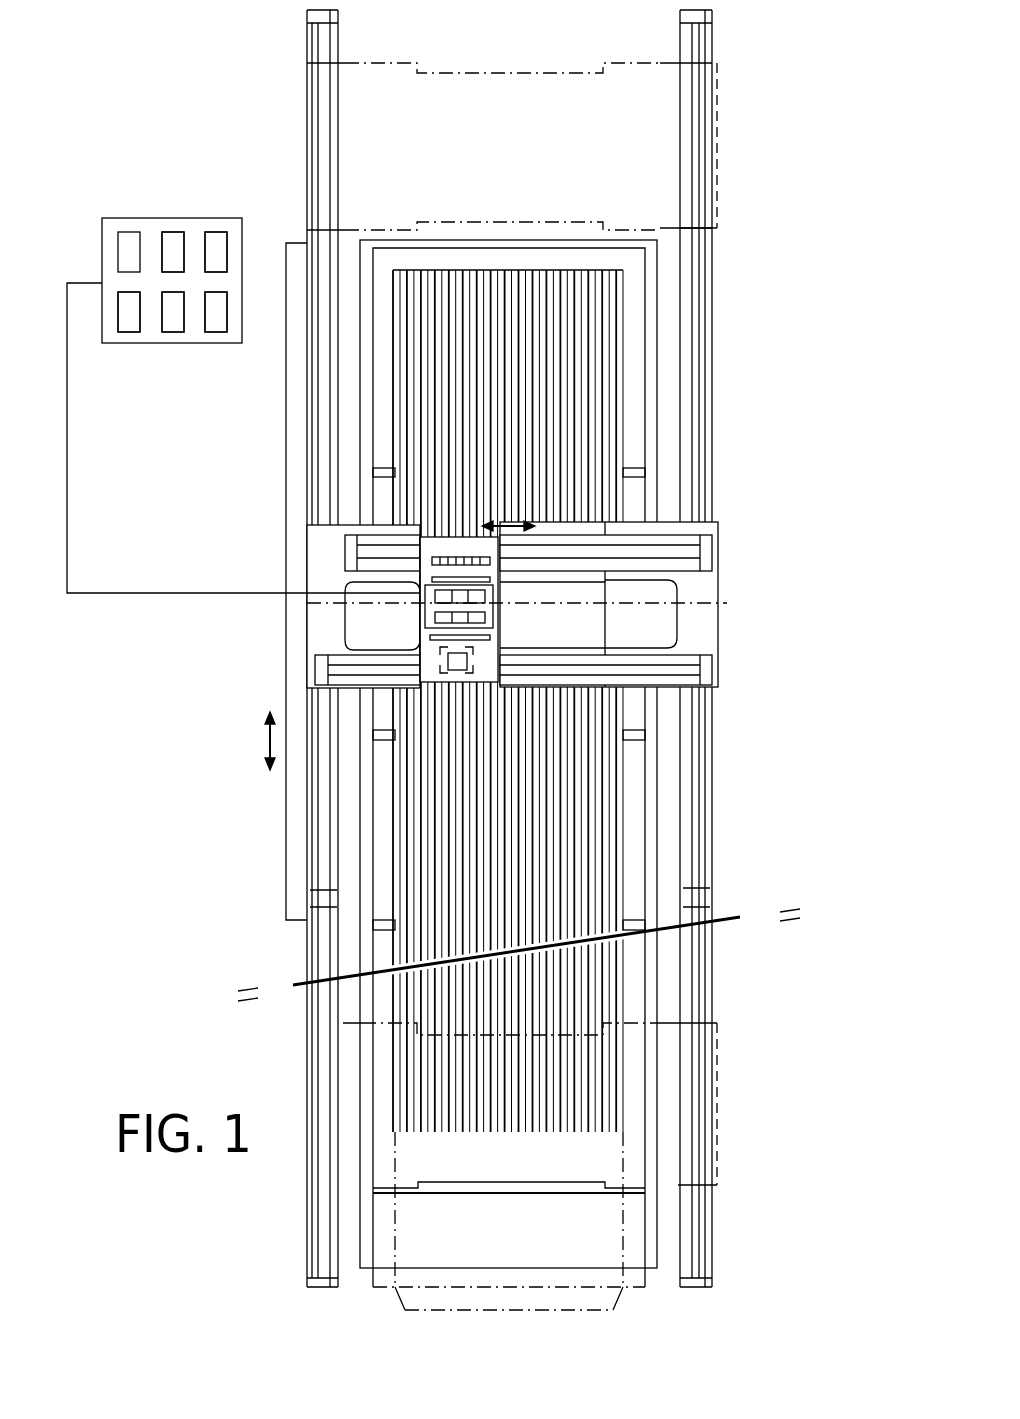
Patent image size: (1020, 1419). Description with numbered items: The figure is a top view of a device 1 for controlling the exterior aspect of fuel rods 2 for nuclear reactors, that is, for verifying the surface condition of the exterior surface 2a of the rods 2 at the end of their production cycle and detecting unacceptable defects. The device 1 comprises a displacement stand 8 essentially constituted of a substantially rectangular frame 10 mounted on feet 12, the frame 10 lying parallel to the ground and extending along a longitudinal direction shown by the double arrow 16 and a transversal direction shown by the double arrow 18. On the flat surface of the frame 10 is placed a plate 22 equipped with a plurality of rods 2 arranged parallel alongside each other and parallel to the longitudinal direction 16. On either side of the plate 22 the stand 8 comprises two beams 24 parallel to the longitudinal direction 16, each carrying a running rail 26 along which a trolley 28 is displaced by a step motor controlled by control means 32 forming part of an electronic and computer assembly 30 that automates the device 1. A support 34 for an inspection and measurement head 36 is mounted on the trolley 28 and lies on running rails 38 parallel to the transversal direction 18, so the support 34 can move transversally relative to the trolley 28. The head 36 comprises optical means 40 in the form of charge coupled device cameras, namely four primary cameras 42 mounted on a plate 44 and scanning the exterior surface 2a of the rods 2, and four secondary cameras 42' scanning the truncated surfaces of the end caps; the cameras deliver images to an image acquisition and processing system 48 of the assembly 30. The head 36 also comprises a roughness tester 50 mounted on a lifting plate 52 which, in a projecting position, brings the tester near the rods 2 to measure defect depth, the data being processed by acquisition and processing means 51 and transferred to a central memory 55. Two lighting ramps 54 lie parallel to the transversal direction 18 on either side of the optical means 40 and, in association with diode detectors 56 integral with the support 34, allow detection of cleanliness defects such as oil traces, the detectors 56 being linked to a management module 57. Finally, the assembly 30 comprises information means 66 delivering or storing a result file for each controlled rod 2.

The device 1 is at (193, 818).
The fuel rods 2 is at (567, 1133).
The exterior surface 2a is at (605, 983).
The displacement stand 8 is at (283, 686).
The frame 10 is at (652, 805).
The feet 12 is at (683, 888).
The longitudinal direction 16 is at (266, 740).
The transversal direction 18 is at (507, 523).
The plate 22 is at (386, 866).
The beams 24 is at (712, 338).
The running rails 26 is at (705, 408).
The trolley 28 is at (725, 157).
The electronic and computer assembly 30 is at (190, 212).
The control means 32 is at (120, 255).
The support 34 is at (433, 535).
The inspection and measurement head 36 is at (493, 575).
The running rails 38 is at (690, 555).
The optical means 40 is at (427, 613).
The primary cameras 42 is at (494, 599).
The secondary cameras 42' is at (501, 616).
The plate 44 is at (494, 623).
The image acquisition and processing system 48 is at (215, 237).
The roughness tester 50 is at (453, 663).
The acquisition and processing means 51 is at (128, 323).
The lifting plate 52 is at (467, 672).
The lighting ramps 54 is at (432, 580).
The central memory 55 is at (175, 320).
The diode detectors 56 is at (470, 557).
The management module 57 is at (172, 237).
The information means 66 is at (212, 320).